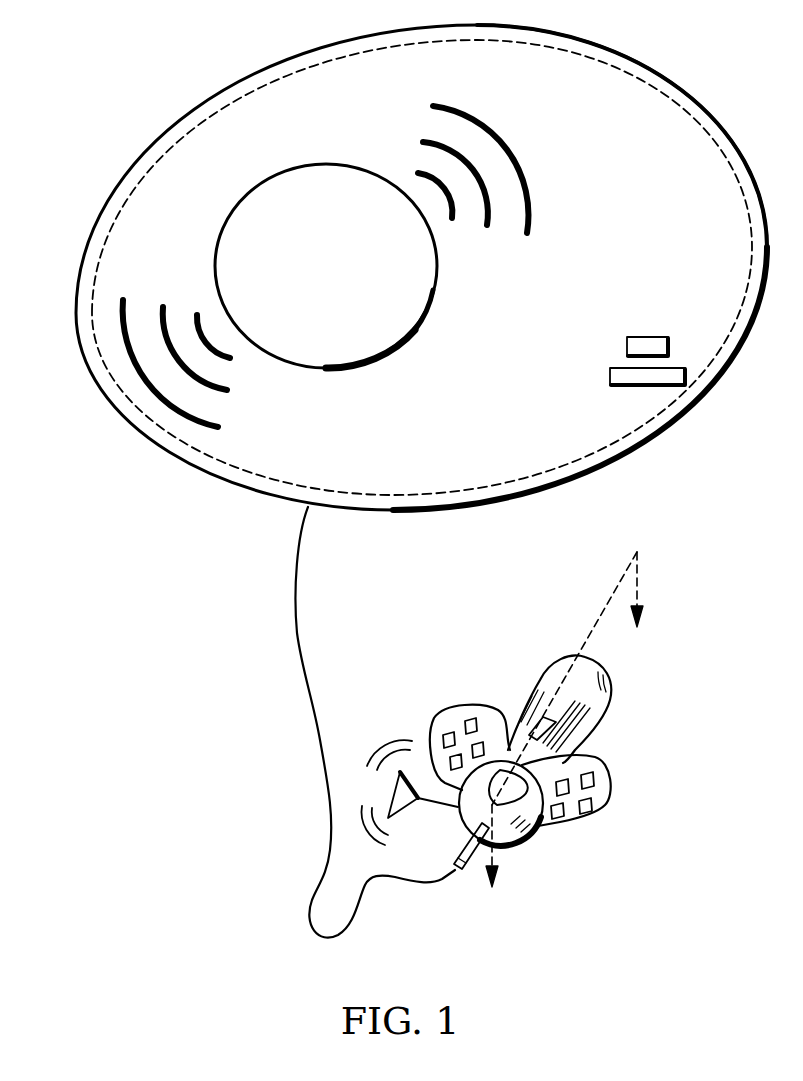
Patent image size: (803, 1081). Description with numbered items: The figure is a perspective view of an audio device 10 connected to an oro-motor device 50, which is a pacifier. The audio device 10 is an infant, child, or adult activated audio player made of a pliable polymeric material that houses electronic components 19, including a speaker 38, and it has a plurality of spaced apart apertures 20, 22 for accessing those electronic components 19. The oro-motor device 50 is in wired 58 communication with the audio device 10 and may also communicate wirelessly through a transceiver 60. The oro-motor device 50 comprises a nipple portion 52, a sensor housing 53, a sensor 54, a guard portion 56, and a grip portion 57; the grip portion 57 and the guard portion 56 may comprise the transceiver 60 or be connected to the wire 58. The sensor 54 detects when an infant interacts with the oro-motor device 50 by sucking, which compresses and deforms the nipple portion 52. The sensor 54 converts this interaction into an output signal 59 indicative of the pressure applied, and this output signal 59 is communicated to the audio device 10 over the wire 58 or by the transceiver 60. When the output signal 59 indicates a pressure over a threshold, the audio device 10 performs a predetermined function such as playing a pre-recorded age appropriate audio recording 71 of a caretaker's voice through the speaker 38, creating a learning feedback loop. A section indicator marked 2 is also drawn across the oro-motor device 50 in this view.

The audio device 10 is at (86, 99).
The electronic components 19 is at (452, 497).
The aperture 20 is at (627, 346).
The aperture 22 is at (610, 376).
The speaker 38 is at (438, 268).
The oro-motor device 50 is at (423, 664).
The nipple portion 52 is at (612, 688).
The sensor housing 53 is at (605, 712).
The sensor 54 is at (528, 742).
The guard portion 56 is at (597, 797).
The grip portion 57 is at (518, 838).
The wire 58 is at (310, 692).
The output signal 59 is at (319, 537).
The transceiver 60 is at (388, 800).
The audio recording 71 is at (526, 164).
The section line 2- 2 is at (565, 735).